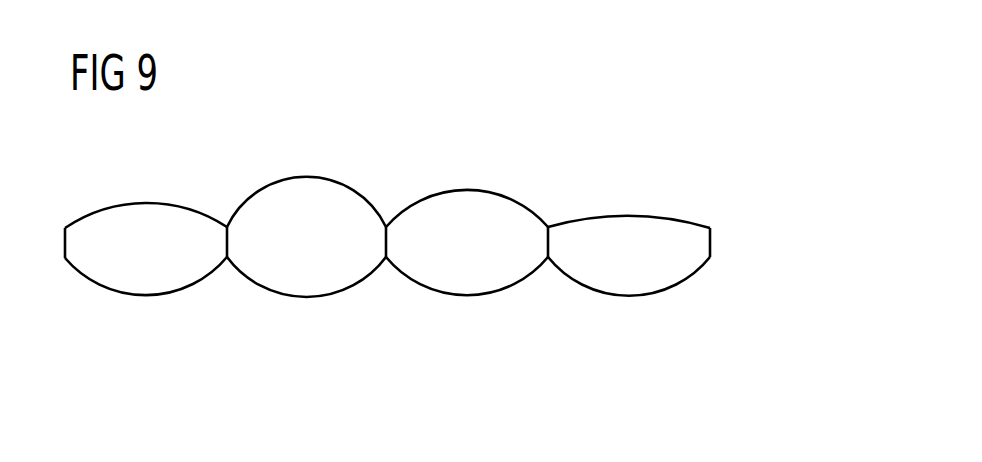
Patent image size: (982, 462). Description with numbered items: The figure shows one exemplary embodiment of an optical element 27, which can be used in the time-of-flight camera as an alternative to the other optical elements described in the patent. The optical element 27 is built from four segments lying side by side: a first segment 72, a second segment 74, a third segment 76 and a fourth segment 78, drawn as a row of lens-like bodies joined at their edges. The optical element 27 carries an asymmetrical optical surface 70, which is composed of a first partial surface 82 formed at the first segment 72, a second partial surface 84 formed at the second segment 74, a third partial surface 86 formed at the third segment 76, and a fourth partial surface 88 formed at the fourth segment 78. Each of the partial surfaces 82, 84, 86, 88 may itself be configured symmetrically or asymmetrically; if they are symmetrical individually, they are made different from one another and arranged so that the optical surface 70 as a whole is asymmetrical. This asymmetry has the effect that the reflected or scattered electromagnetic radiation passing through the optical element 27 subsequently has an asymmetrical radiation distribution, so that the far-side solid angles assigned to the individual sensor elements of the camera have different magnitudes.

The optical element 27 is at (757, 180).
The asymmetrical optical surface 70 is at (660, 203).
The first segment 72 is at (627, 297).
The second segment 74 is at (465, 295).
The third segment 76 is at (300, 297).
The fourth segment 78 is at (148, 295).
The first partial surface 82 is at (623, 213).
The second partial surface 84 is at (463, 188).
The third partial surface 86 is at (278, 188).
The fourth partial surface 88 is at (135, 202).